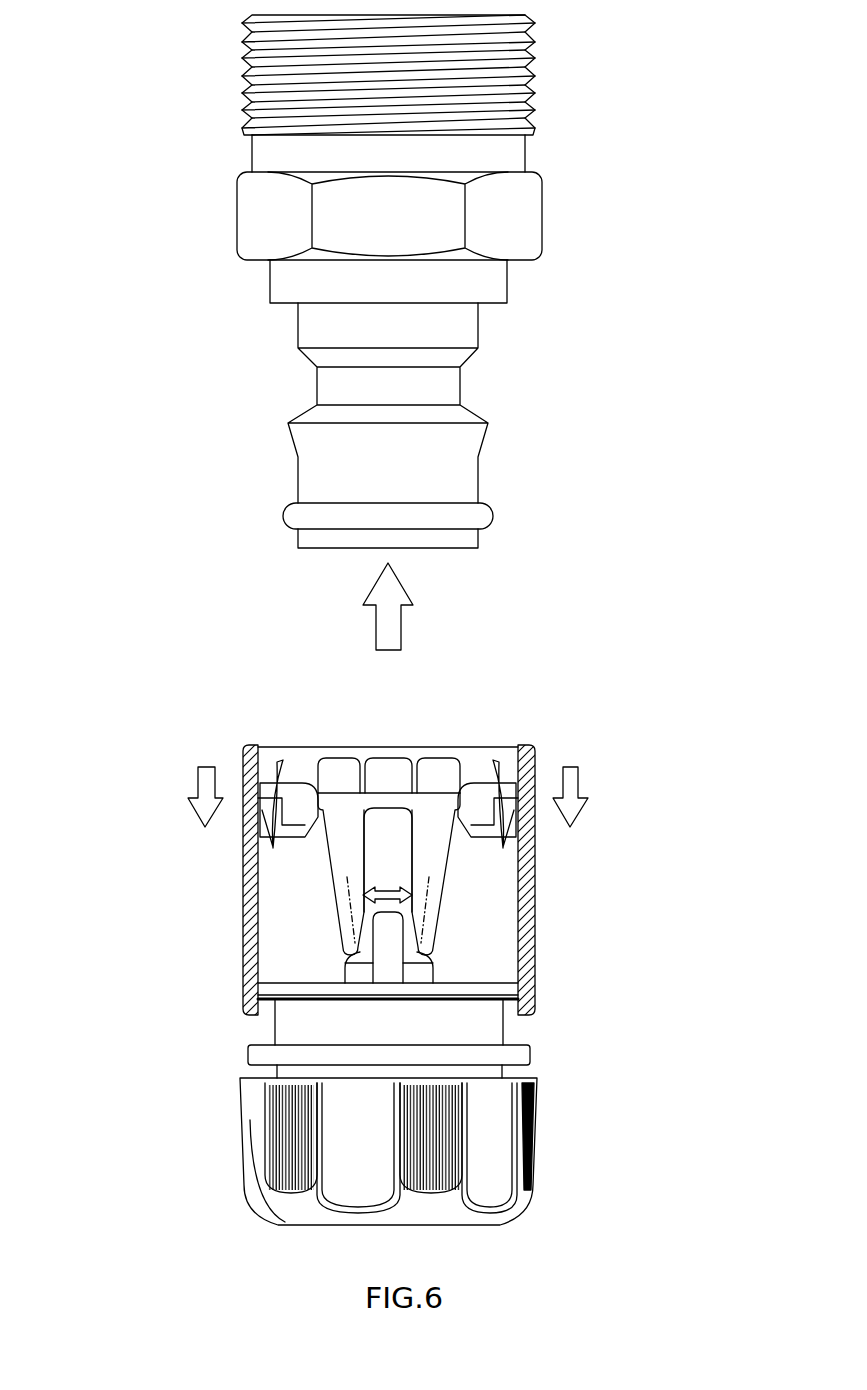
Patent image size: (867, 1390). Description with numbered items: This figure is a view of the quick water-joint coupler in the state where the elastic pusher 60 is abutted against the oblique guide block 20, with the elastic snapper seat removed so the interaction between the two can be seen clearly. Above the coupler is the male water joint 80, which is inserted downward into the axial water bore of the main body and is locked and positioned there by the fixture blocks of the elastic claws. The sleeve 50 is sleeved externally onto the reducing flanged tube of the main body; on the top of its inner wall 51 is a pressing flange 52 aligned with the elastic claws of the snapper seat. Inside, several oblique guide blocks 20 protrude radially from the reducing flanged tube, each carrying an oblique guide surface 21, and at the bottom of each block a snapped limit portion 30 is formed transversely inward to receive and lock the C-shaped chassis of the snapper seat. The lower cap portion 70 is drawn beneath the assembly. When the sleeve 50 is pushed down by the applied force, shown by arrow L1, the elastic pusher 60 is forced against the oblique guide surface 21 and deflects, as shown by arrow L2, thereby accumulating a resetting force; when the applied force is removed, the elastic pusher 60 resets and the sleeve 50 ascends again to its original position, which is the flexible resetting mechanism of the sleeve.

The oblique guide block 20 is at (360, 977).
The oblique guide surface 21 is at (368, 943).
The snapped limit portion 30 is at (355, 968).
The sleeve 50 is at (546, 1024).
The inner wall 51 is at (514, 766).
The pressing flange 52 is at (302, 810).
The elastic pusher 60 is at (357, 925).
The cap 70 is at (214, 1168).
The male water joint 80 is at (528, 428).
The applied force arrow L1 is at (195, 785).
The deflection arrow L2 is at (392, 888).